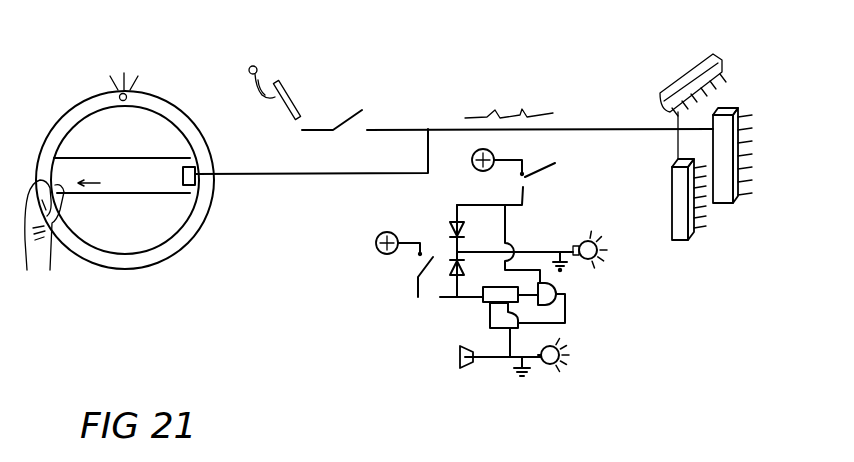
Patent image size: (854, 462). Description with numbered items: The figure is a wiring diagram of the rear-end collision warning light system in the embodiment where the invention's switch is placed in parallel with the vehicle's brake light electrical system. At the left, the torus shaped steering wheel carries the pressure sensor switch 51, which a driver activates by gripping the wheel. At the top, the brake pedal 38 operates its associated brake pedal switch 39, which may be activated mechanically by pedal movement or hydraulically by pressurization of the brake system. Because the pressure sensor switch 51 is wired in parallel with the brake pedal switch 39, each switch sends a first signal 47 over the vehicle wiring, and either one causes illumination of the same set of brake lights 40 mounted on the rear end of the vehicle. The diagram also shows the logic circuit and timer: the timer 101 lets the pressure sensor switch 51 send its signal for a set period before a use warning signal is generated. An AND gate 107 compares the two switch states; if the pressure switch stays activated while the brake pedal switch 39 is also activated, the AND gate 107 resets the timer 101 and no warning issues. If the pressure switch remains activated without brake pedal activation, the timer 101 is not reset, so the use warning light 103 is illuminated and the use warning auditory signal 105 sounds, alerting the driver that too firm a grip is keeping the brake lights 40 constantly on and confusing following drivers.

The use warning light 103 is at (132, 92).
The pressure sensor switch 51 is at (193, 172).
The brake pedal 38 is at (267, 73).
The brake pedal switch 39 is at (375, 112).
The first signal 47 is at (508, 107).
The brake lights 40 is at (720, 260).
The timer 101 is at (480, 308).
The use warning auditory signal 105 is at (470, 366).
The AND gate 107 is at (557, 289).